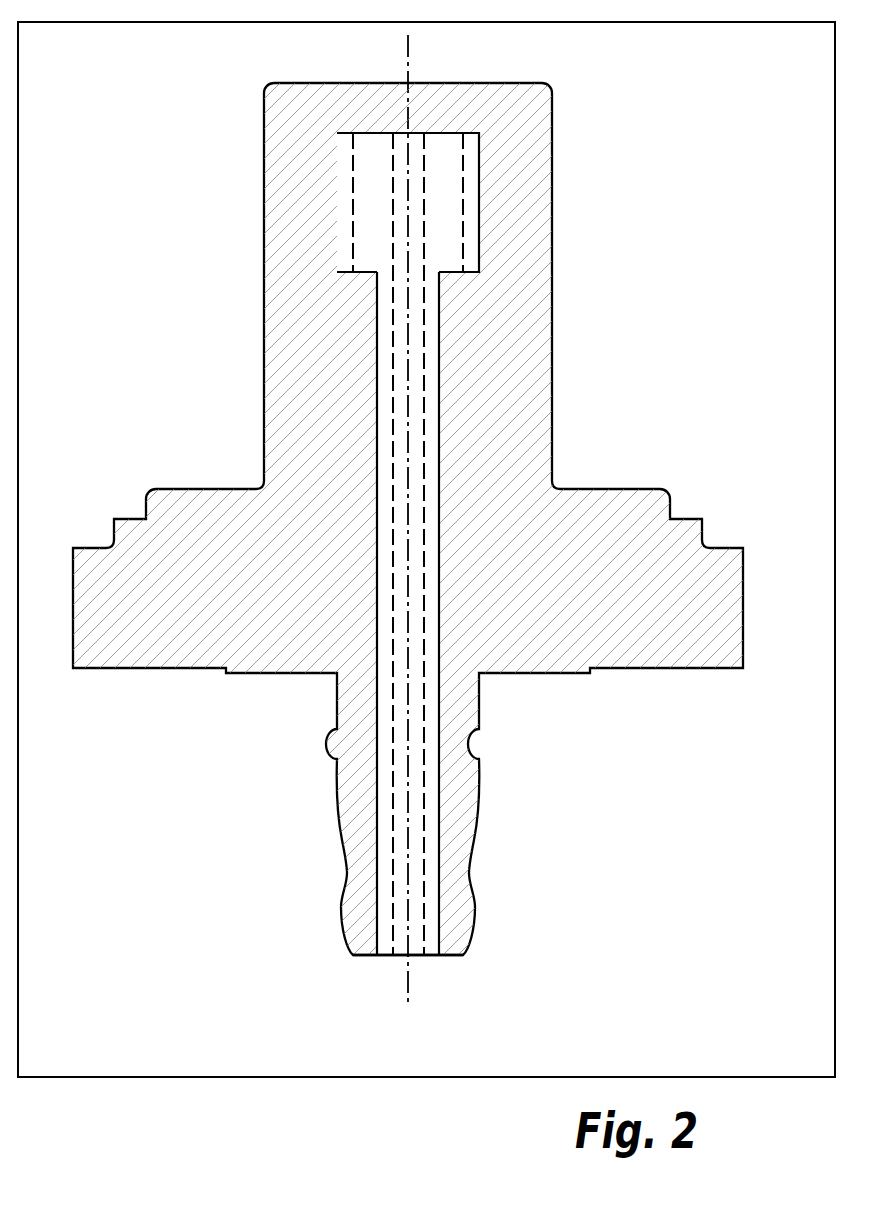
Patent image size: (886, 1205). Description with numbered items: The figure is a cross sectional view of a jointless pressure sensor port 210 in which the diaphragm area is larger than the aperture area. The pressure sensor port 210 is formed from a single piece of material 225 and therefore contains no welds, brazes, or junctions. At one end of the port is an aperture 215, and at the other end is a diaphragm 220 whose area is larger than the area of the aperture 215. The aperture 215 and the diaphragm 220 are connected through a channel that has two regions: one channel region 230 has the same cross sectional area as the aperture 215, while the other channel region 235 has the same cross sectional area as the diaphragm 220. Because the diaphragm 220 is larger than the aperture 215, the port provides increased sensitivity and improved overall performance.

The jointless pressure sensor port 210 is at (640, 1038).
The aperture 215 is at (408, 955).
The diaphragm 220 is at (407, 133).
The single piece of material 225 is at (551, 634).
The channel region 230 is at (408, 795).
The channel region 235 is at (407, 227).